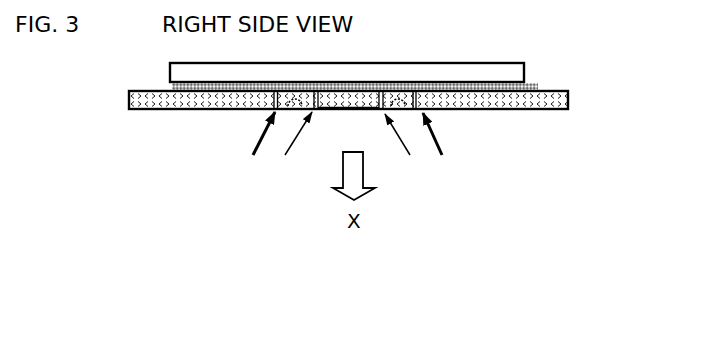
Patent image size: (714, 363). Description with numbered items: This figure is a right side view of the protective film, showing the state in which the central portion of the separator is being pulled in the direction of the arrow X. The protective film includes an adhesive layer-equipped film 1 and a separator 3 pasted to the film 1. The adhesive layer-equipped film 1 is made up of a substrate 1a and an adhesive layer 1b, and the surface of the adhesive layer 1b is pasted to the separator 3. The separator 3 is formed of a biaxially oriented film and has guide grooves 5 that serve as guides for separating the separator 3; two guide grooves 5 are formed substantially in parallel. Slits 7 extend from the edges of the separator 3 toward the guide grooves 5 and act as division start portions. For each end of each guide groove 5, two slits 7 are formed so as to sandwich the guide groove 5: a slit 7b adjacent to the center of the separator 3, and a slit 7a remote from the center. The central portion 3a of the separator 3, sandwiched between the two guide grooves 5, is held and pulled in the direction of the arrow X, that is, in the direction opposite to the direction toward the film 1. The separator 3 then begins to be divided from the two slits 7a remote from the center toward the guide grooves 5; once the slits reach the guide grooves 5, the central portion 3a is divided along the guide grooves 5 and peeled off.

The adhesive layer-equipped film 1 is at (396, 51).
The substrate 1a is at (511, 72).
The adhesive layer 1b is at (379, 69).
The separator 3 is at (568, 97).
The central portion 3a is at (354, 105).
The guide groove 5 is at (402, 96).
The slit 7 is at (351, 166).
The slit remote from the center 7a is at (349, 147).
The slit adjacent to the center 7b is at (347, 147).